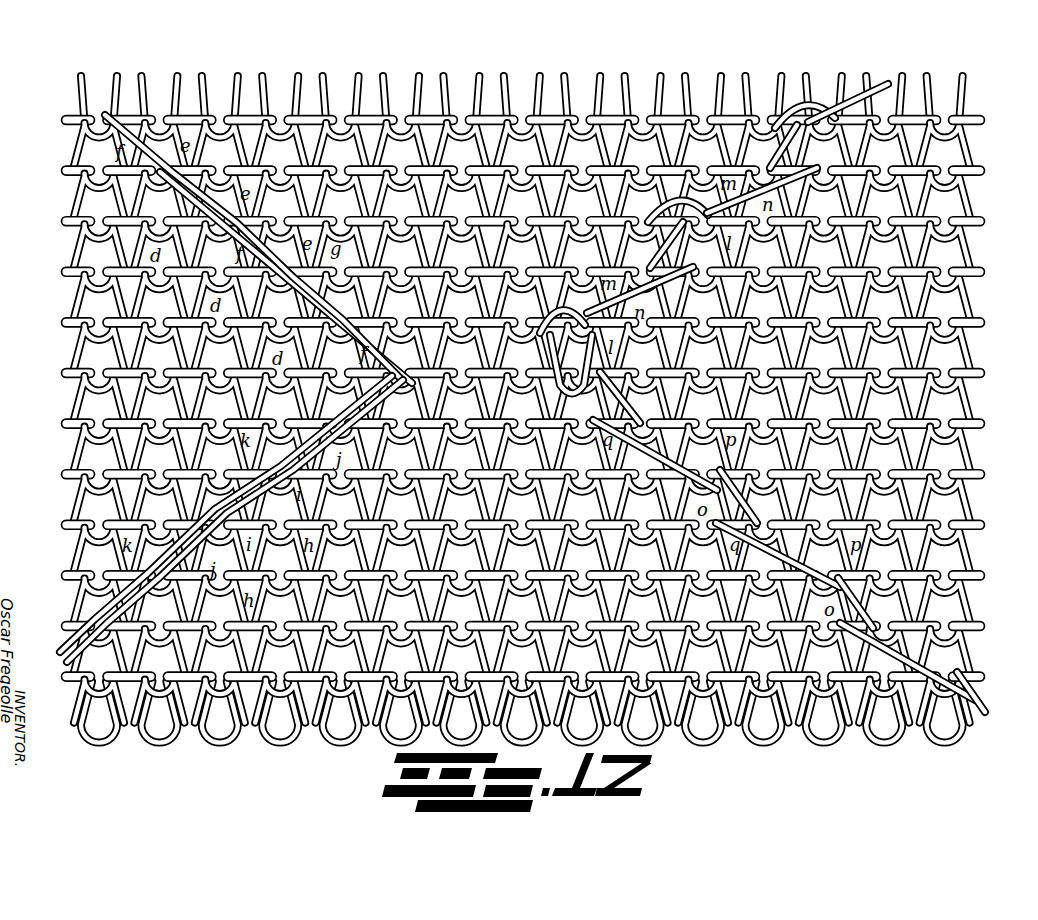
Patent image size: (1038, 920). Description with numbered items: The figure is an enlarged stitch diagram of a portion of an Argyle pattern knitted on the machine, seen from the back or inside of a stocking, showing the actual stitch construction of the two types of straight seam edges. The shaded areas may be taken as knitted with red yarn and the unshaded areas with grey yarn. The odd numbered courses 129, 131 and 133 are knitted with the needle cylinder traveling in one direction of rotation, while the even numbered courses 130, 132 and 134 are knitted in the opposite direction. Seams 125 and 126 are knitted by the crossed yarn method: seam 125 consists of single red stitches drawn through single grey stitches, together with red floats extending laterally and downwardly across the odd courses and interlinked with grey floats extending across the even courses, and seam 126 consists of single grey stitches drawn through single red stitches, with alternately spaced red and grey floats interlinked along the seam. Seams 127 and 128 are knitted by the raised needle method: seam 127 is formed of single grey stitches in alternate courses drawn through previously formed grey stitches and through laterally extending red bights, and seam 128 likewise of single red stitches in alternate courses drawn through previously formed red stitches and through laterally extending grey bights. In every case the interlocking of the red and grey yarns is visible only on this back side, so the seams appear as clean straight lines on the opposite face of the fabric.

The seam 125 is at (72, 88).
The seam 126 is at (62, 668).
The seam 127 is at (895, 80).
The seam 128 is at (980, 712).
The course 129 is at (73, 142).
The course 130 is at (73, 193).
The course 131 is at (73, 243).
The course 132 is at (73, 294).
The course 133 is at (73, 344).
The course 134 is at (73, 395).